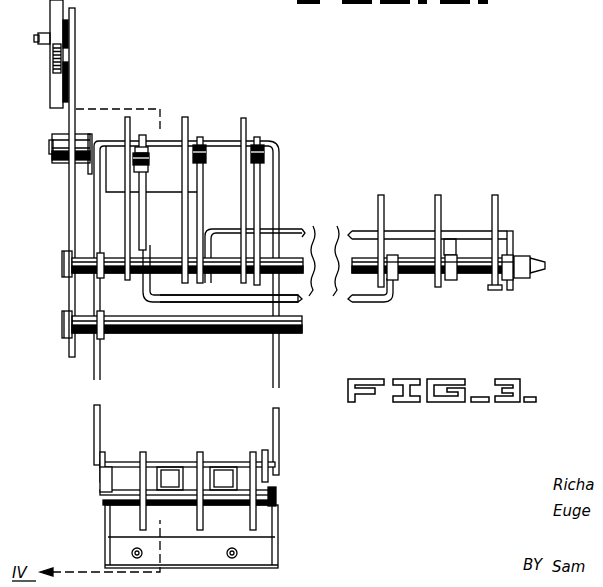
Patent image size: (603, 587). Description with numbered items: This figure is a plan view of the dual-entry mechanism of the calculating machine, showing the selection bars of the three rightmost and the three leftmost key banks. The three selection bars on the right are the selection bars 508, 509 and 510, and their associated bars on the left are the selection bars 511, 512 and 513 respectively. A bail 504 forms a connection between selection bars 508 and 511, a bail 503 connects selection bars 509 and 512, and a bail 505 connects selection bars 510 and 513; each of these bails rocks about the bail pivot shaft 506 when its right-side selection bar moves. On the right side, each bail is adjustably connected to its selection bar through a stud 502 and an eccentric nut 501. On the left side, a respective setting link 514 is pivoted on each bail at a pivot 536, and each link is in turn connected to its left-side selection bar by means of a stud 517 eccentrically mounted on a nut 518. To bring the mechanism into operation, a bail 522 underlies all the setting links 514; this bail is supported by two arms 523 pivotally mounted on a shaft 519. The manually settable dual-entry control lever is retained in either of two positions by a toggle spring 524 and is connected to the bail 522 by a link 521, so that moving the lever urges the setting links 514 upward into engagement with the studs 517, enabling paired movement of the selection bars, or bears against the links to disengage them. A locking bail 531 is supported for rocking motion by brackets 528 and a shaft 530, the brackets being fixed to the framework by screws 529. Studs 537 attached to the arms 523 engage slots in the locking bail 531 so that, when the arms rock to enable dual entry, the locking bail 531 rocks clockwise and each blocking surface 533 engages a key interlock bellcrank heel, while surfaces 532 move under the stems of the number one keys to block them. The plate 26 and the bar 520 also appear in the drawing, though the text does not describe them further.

The mounting plate 26 is at (57, 13).
The toggle spring 524 is at (68, 85).
The link 521 is at (62, 158).
The support bar 520 is at (70, 207).
The bail 522 is at (222, 187).
The arms 523 is at (94, 405).
The bail pivot shaft 506 is at (62, 263).
The bail 505 is at (352, 305).
The shaft 519 is at (62, 325).
The pivot 536 is at (163, 252).
The bail 504 is at (276, 296).
The bail 503 is at (362, 232).
The selection bar 513 is at (127, 282).
The selection bar 512 is at (190, 93).
The selection bar 511 is at (245, 117).
The setting link 514 is at (200, 143).
The stud 517 is at (148, 158).
The nut 518 is at (133, 168).
The selection bar 510 is at (381, 195).
The selection bar 509 is at (438, 195).
The selection bar 508 is at (497, 195).
The eccentric nut 501 is at (503, 290).
The stud 502 is at (525, 280).
The locking bail 531 is at (238, 462).
The brackets 528 is at (253, 560).
The surfaces 532 is at (140, 515).
The studs 537 is at (107, 457).
The blocking surface 533 is at (105, 478).
The shaft 530 is at (277, 496).
The screws 529 is at (130, 552).